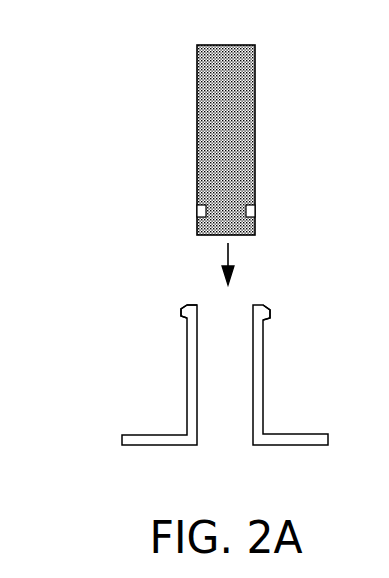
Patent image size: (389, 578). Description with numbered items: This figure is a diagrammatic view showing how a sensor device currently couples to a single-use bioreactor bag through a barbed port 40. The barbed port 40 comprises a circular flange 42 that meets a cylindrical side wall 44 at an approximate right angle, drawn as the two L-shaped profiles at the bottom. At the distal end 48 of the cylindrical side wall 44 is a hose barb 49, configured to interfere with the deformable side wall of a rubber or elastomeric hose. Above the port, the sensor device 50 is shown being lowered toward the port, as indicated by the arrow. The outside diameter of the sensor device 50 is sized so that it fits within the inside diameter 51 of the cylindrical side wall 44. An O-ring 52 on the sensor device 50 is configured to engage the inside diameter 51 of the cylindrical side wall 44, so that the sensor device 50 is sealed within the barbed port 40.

The barbed port 40 is at (192, 304).
The circular flange 42 is at (135, 436).
The cylindrical side wall 44 is at (188, 357).
The distal end 48 is at (191, 305).
The hose barb 49 is at (184, 309).
The sensor device 50 is at (255, 95).
The inside diameter 51 is at (195, 308).
The O-ring 52 is at (257, 207).